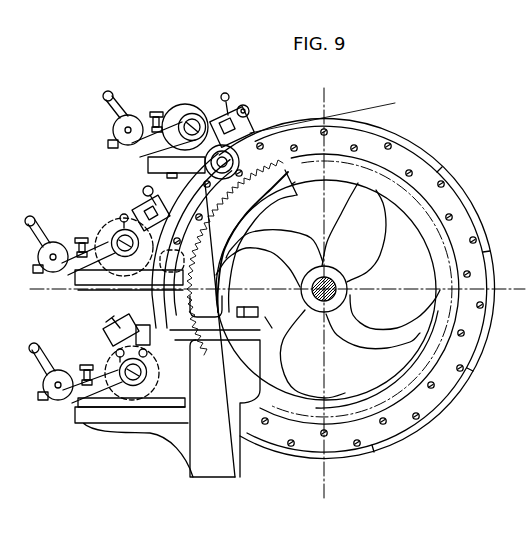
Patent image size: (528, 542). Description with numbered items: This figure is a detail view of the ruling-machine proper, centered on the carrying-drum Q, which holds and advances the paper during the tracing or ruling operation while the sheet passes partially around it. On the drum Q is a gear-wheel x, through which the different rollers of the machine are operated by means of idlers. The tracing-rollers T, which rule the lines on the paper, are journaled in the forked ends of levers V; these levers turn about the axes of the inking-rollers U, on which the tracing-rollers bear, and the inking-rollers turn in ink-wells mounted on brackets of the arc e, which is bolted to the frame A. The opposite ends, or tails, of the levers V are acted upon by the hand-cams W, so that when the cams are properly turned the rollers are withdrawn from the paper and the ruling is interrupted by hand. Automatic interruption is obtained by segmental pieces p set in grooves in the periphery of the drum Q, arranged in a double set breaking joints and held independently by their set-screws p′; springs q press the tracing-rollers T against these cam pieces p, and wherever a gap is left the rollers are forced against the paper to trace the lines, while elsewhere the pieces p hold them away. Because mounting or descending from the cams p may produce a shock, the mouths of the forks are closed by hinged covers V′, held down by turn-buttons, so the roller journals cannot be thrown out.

The segmental pieces p is at (447, 185).
The set-screws p′ is at (328, 287).
The arc e is at (277, 204).
The gear-wheel x is at (344, 405).
The carrying-drum Q is at (360, 322).
The frame A is at (235, 290).
The inking-rollers U is at (190, 113).
The valve passage v′ is at (272, 128).
The hand-cams W is at (110, 259).
The springs q is at (113, 241).
The tracing-rollers T is at (232, 118).
The levers V is at (248, 118).
The hinged covers V′ is at (150, 205).